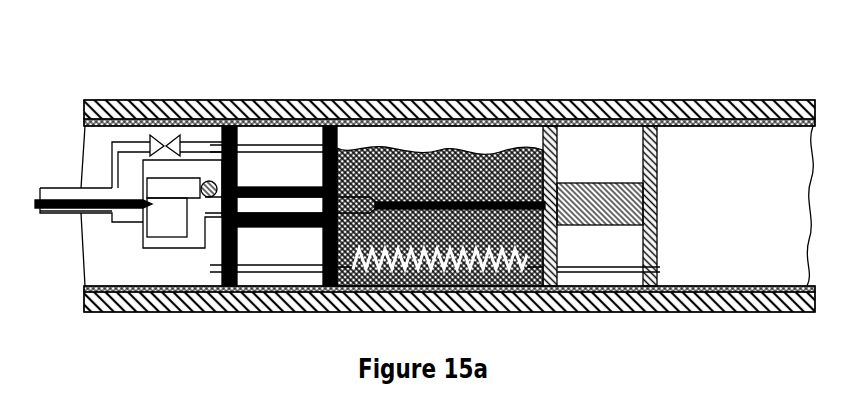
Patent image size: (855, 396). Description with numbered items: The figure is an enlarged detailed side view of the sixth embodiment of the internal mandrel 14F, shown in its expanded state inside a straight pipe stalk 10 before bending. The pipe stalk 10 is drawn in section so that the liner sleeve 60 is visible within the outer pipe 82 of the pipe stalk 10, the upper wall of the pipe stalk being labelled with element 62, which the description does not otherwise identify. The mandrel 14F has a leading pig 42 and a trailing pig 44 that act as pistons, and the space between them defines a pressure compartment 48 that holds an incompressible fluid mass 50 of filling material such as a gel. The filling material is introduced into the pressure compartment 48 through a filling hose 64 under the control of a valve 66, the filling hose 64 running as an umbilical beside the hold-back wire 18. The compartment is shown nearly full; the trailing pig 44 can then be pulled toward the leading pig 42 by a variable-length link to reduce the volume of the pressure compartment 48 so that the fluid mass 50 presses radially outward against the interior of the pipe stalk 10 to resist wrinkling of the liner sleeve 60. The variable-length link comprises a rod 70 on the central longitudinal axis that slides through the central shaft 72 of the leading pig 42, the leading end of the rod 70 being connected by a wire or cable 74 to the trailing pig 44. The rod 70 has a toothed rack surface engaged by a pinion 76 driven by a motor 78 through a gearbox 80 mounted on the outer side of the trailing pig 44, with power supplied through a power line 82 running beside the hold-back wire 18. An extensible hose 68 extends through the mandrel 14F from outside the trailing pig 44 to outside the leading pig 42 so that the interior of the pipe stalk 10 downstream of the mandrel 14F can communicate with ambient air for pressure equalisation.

The pipe stalk 10 is at (735, 215).
The mandrel 14F is at (352, 77).
The hold-back wire 18 is at (63, 213).
The leading pig 42 is at (267, 243).
The trailing pig 44 is at (600, 162).
The pressure compartment 48 is at (450, 137).
The fluid mass 50 is at (440, 216).
The liner sleeve 60 is at (713, 303).
The upper housing wall 62 is at (183, 100).
The filling hose 64 is at (268, 146).
The valve 66 is at (158, 143).
The extensible hose 68 is at (597, 267).
The rod 70 is at (223, 210).
The central shaft 72 is at (273, 256).
The wire or cable 74 is at (497, 201).
The pinion 76 is at (208, 181).
The motor 78 is at (168, 228).
The gearbox 80 is at (158, 190).
The power line 82 is at (103, 213).